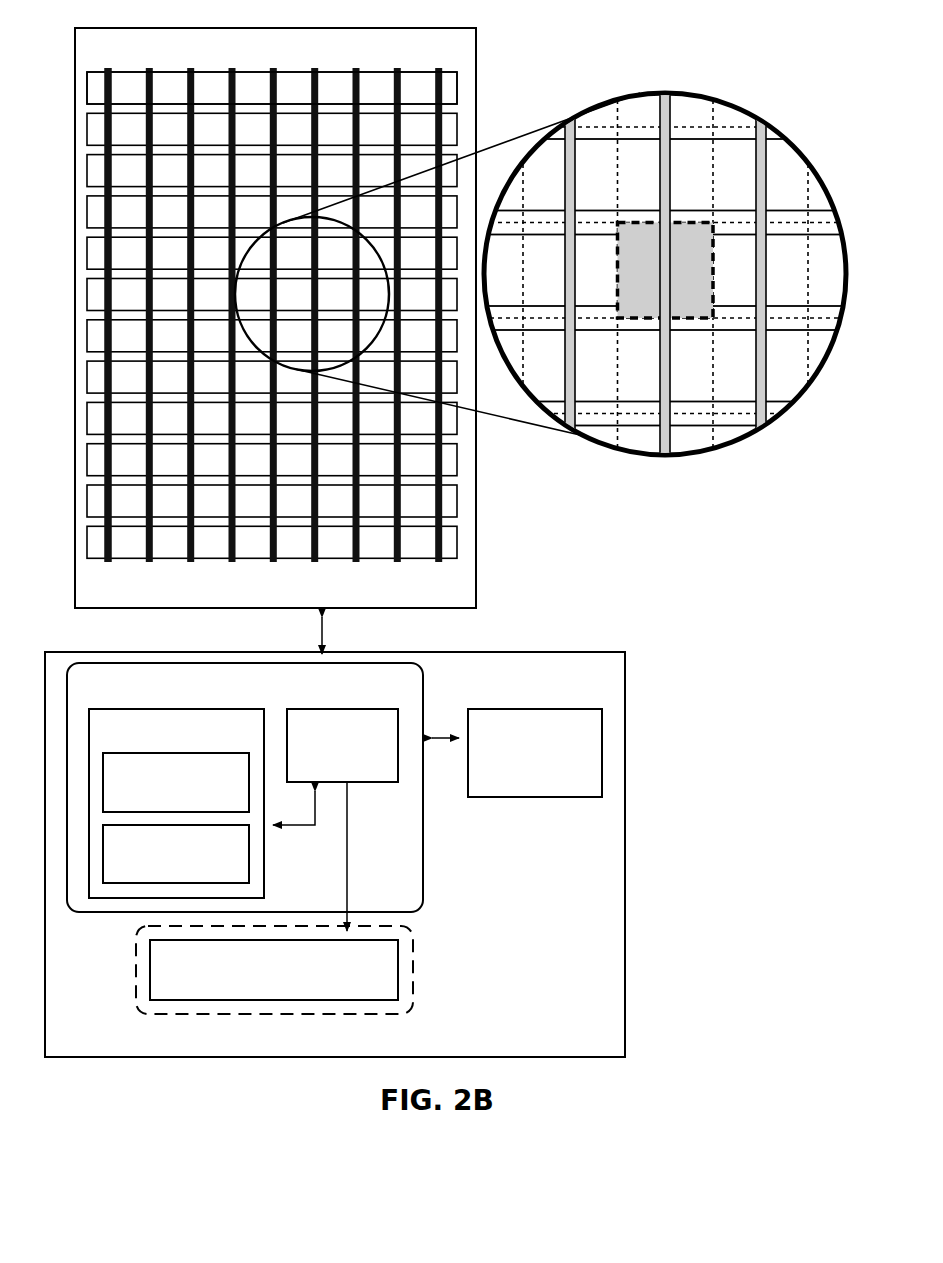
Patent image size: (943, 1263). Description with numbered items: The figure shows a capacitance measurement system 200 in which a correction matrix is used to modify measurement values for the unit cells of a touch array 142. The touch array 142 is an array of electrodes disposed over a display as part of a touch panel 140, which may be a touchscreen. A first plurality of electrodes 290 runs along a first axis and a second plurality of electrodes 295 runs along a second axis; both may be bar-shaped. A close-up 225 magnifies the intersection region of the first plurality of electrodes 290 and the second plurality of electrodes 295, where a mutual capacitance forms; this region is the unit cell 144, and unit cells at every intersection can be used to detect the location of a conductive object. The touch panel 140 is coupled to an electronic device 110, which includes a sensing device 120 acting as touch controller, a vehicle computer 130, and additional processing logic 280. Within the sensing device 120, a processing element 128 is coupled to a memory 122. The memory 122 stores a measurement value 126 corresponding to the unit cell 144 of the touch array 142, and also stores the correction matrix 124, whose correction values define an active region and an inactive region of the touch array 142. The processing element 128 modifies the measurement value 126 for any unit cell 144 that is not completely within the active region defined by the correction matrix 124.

The electronic device 110 is at (335, 854).
The sensing device 120 is at (245, 787).
The memory 122 is at (176, 803).
The correction matrix 124 is at (176, 782).
The measurement value 126 is at (176, 854).
The processing element 128 is at (342, 745).
The vehicle computer 130 is at (535, 753).
The touch panel 140 is at (275, 318).
The touch array 142 is at (468, 91).
The unit cell 144 is at (712, 271).
The capacitance measurement system 200 is at (665, 251).
The close-up 225 is at (792, 140).
The additional processing logic 280 is at (413, 983).
The first plurality of electrodes 290 is at (86, 90).
The second plurality of electrodes 295 is at (106, 68).